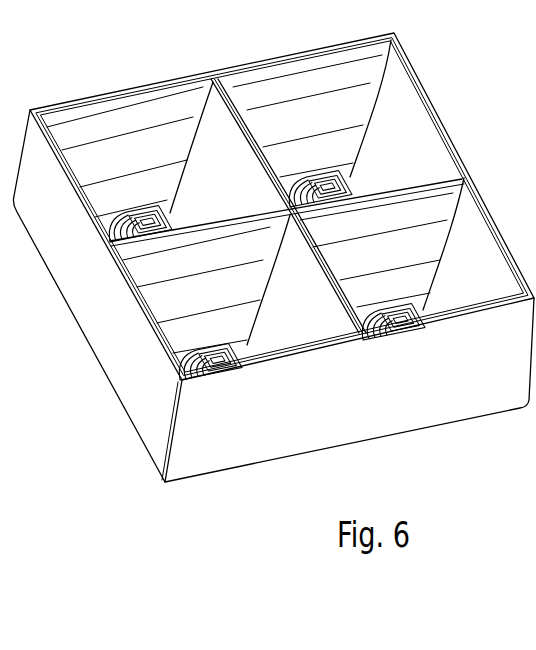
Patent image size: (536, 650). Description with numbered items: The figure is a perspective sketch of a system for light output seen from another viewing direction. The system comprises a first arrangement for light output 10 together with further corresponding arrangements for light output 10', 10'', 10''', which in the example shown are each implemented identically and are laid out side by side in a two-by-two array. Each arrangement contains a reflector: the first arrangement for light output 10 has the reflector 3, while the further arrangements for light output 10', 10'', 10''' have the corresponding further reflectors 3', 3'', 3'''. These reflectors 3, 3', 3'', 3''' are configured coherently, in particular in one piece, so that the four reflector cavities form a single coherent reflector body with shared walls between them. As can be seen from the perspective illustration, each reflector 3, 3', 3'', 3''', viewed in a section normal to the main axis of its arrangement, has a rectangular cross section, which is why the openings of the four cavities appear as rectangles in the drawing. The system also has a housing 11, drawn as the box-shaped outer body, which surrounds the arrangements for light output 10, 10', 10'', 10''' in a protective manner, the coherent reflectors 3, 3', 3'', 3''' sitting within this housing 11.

The reflector 3 is at (134, 191).
The reflector 3' is at (204, 328).
The reflector 3'' is at (387, 289).
The reflector 3''' is at (314, 155).
The arrangement for light output 10 is at (130, 137).
The arrangement for light output 10' is at (231, 305).
The arrangement for light output 10'' is at (407, 268).
The arrangement for light output 10''' is at (353, 108).
The housing 11 is at (428, 413).